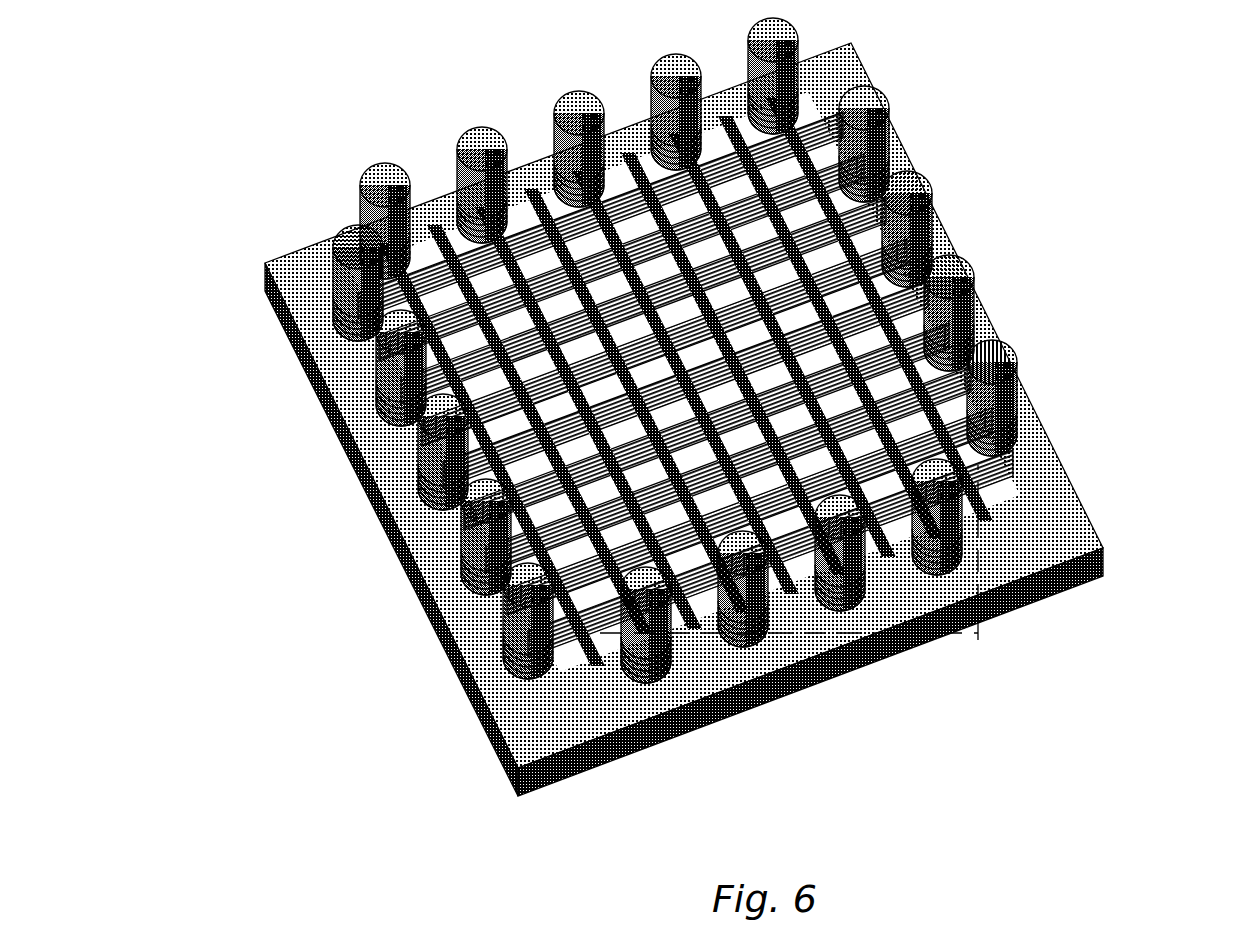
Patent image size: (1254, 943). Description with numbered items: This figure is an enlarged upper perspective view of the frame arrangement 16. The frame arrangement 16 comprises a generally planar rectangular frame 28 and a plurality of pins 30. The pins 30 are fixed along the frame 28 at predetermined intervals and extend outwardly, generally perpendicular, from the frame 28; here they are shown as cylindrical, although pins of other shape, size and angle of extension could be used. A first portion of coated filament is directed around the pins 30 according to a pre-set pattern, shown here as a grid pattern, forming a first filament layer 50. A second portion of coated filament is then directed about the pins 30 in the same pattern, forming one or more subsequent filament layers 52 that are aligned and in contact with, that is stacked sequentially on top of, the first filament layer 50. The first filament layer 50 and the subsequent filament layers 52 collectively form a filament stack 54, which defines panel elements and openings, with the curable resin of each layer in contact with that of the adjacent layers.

The frame arrangement 16 is at (667, 408).
The frame 28 is at (1022, 525).
The pins 30 is at (950, 275).
The first filament layer 50 is at (490, 700).
The subsequent filament layers 52 is at (457, 585).
The filament stack 54 is at (690, 640).